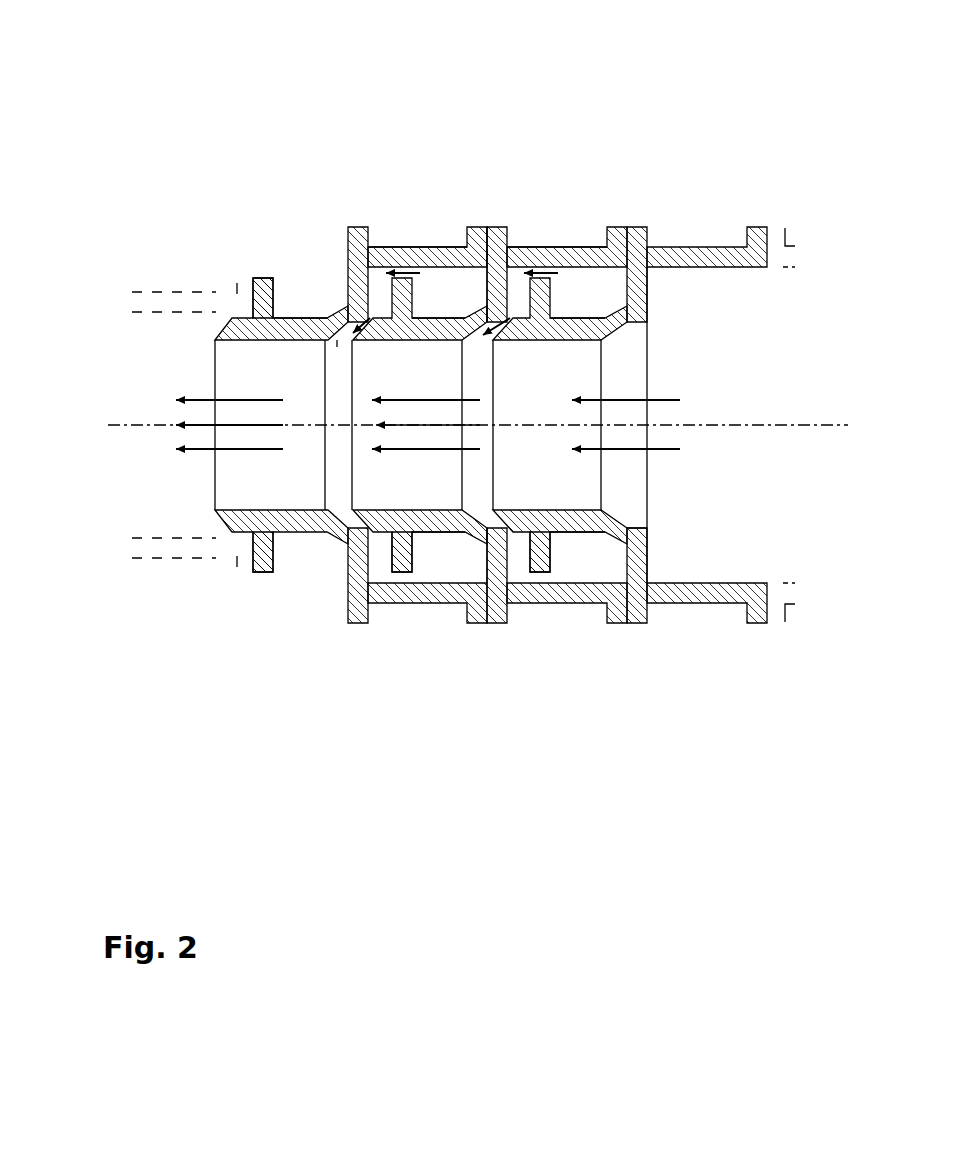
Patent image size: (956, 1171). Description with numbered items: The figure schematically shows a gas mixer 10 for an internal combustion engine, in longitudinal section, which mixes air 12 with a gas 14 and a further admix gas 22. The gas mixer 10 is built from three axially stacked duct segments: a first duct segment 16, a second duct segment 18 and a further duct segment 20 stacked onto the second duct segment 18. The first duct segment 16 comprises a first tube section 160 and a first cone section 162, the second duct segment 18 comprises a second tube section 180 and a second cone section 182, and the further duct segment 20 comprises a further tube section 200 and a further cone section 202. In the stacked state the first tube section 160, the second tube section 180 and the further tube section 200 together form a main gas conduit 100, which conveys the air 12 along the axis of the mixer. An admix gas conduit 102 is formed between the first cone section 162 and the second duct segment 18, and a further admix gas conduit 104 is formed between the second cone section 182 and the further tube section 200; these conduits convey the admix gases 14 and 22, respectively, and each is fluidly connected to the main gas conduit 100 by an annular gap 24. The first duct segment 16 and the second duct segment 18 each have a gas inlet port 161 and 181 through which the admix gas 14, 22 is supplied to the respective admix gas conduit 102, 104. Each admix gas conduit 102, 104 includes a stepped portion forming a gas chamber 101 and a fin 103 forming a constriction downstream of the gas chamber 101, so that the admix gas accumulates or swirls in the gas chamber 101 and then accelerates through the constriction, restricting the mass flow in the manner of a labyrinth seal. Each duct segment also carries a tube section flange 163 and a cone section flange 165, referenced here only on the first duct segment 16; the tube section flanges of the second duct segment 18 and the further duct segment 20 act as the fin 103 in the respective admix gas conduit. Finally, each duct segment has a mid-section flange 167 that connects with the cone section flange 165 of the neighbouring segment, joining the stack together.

The gas mixer 10 is at (216, 138).
The air 12 is at (660, 400).
The gas 14 is at (443, 266).
The first duct segment 16 is at (347, 317).
The second duct segment 18 is at (597, 247).
The further duct segment 20 is at (700, 247).
The admix gas 22 is at (580, 276).
The annular gap 24 is at (335, 343).
The main gas conduit 100 is at (316, 481).
The gas chamber 101 is at (603, 283).
The admix gas conduit 102 is at (372, 308).
The fin 103 is at (400, 543).
The further admix gas conduit 104 is at (512, 283).
The first tube section 160 is at (243, 325).
The gas inlet port 161 is at (397, 247).
The first cone section 162 is at (315, 320).
The tube section flange 163 is at (270, 533).
The cone section flange 165 is at (500, 245).
The mid-section flange 167 is at (357, 607).
The second tube section 180 is at (423, 532).
The gas inlet port 181 is at (570, 253).
The second cone section 182 is at (482, 540).
The further tube section 200 is at (580, 522).
The further cone section 202 is at (633, 527).